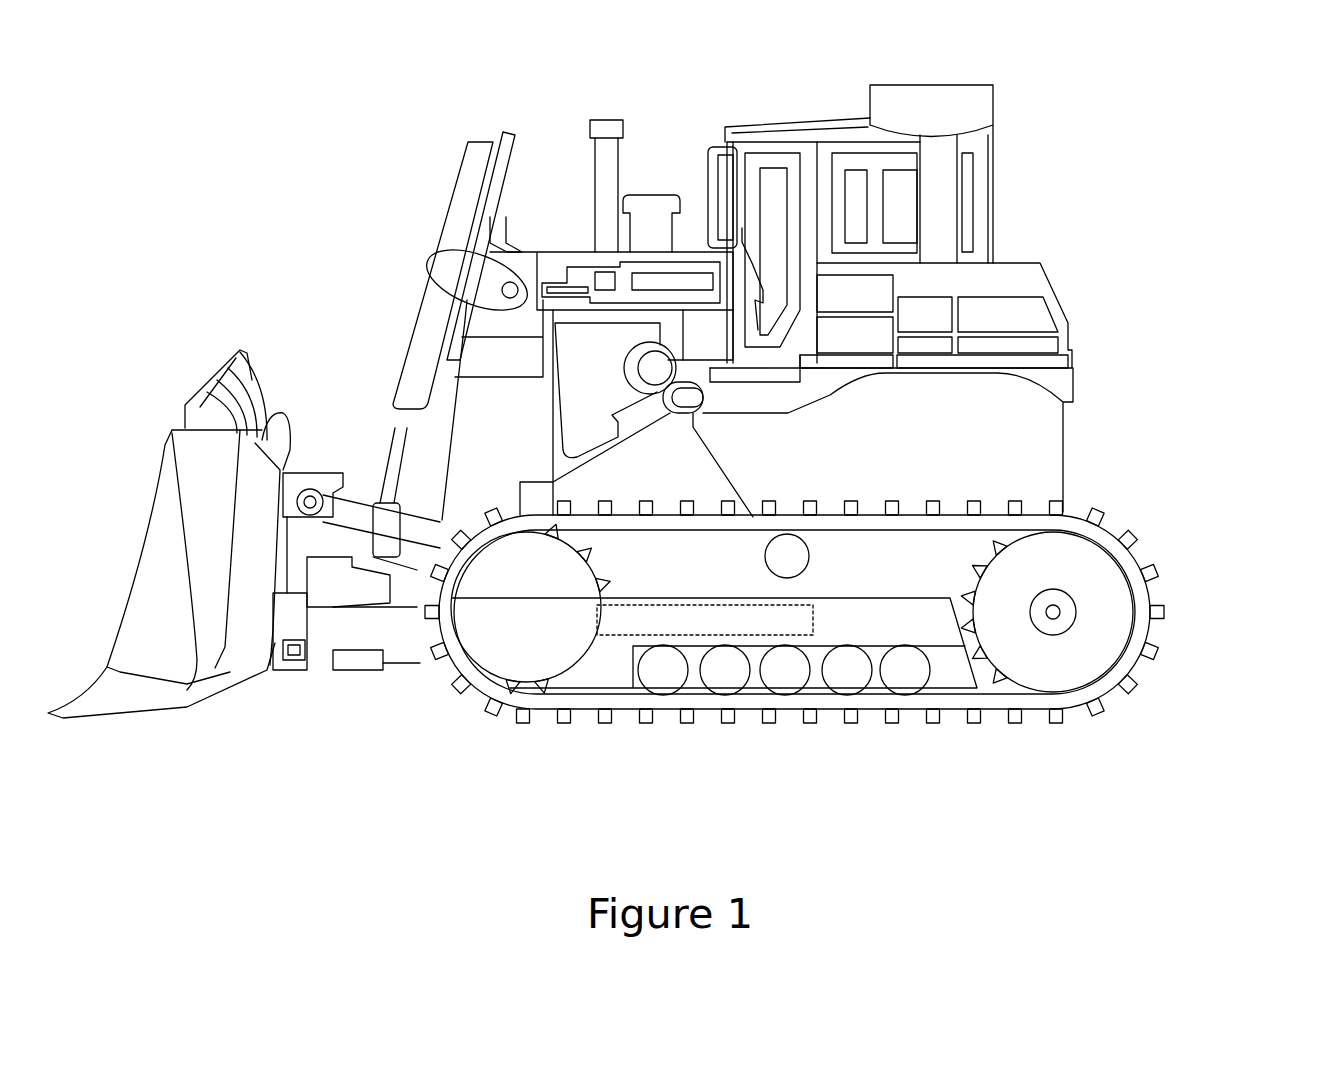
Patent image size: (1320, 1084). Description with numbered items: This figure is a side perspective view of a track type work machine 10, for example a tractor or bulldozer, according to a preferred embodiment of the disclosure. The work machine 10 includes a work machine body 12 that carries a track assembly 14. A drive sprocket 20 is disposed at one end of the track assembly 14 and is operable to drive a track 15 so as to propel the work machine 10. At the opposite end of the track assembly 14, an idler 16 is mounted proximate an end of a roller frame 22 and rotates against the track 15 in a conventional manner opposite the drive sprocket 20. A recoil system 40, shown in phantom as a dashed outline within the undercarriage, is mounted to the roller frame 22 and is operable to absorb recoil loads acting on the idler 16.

The track type work machine 10 is at (1160, 184).
The work machine body 12 is at (1020, 472).
The track assembly 14 is at (1152, 679).
The track 15 is at (972, 700).
The idler 16 is at (458, 657).
The drive sprocket 20 is at (1095, 585).
The roller frame 22 is at (883, 618).
The recoil system 40 is at (622, 628).